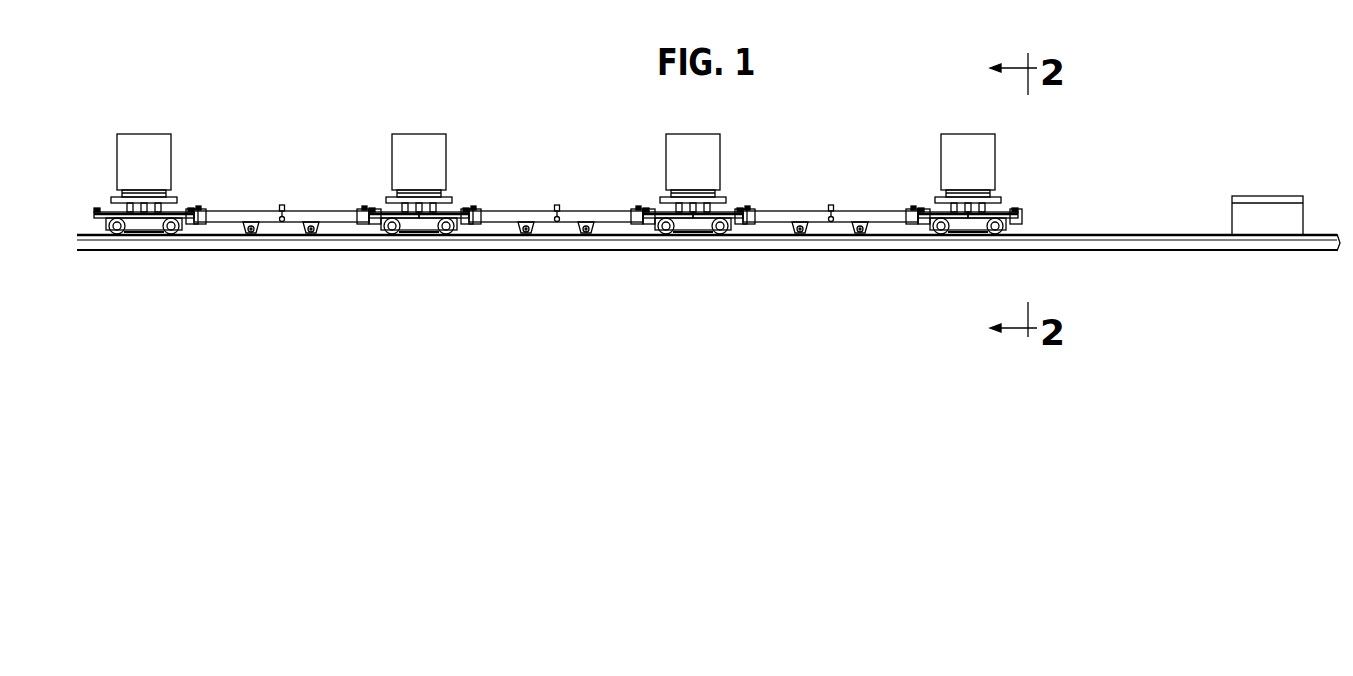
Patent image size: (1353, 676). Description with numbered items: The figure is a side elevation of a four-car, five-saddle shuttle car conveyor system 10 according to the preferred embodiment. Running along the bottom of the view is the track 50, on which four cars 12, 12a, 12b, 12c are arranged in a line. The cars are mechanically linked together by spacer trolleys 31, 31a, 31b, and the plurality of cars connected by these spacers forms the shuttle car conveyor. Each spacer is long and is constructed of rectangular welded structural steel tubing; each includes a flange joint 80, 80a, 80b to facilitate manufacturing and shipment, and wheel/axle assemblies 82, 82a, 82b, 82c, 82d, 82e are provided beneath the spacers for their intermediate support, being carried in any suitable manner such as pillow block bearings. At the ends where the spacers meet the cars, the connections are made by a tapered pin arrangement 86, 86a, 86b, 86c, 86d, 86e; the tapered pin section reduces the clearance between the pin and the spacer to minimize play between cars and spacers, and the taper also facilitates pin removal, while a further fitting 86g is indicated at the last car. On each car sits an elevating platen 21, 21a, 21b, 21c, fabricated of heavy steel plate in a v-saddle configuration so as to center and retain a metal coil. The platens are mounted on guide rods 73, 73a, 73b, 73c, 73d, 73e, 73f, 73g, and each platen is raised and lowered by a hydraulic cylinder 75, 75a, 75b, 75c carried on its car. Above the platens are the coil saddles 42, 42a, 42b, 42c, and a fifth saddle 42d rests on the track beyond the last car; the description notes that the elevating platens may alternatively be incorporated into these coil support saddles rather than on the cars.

The shuttle car conveyor system 10 is at (1198, 113).
The car 12 is at (168, 235).
The car 12a is at (440, 235).
The car 12b is at (715, 235).
The car 12c is at (990, 235).
The elevating platen 21 is at (176, 198).
The elevating platen 21a is at (451, 198).
The elevating platen 21b is at (725, 198).
The elevating platen 21c is at (1000, 198).
The spacer trolley 31 is at (292, 210).
The spacer trolley 31a is at (567, 210).
The spacer trolley 31b is at (841, 210).
The coil saddle 42 is at (110, 199).
The coil saddle 42a is at (385, 199).
The coil saddle 42b is at (659, 199).
The coil saddle 42c is at (934, 199).
The coil saddle 42d is at (1237, 196).
The track 50 is at (1100, 234).
The guide rod 73 is at (130, 234).
The guide rod 73a is at (163, 210).
The guide rod 73b is at (372, 209).
The guide rod 73c is at (438, 210).
The guide rod 73d is at (646, 209).
The guide rod 73e is at (712, 210).
The guide rod 73f is at (921, 209).
The guide rod 73g is at (987, 210).
The hydraulic cylinder 75 is at (147, 230).
The hydraulic cylinder 75a is at (423, 230).
The hydraulic cylinder 75b is at (697, 230).
The hydraulic cylinder 75c is at (970, 230).
The flange joint 80 is at (282, 235).
The flange joint 80a is at (555, 236).
The flange joint 80b is at (830, 236).
The wheel/axle assembly 82 is at (251, 234).
The wheel/axle assembly 82a is at (311, 234).
The wheel/axle assembly 82b is at (527, 234).
The wheel/axle assembly 82c is at (585, 234).
The wheel/axle assembly 82d is at (800, 234).
The wheel/axle assembly 82e is at (860, 234).
The tapered pin arrangement 86 is at (190, 208).
The tapered pin arrangement 86a is at (380, 233).
The tapered pin arrangement 86b is at (465, 208).
The tapered pin arrangement 86c is at (652, 233).
The tapered pin arrangement 86d is at (739, 208).
The tapered pin arrangement 86e is at (926, 233).
The bar bracket 86g is at (1014, 208).